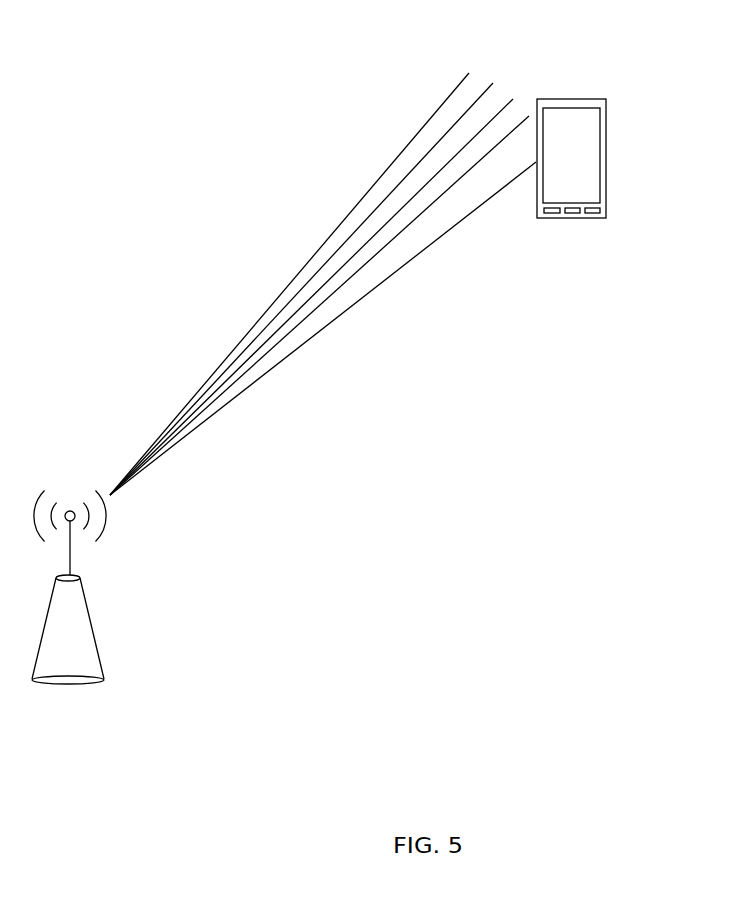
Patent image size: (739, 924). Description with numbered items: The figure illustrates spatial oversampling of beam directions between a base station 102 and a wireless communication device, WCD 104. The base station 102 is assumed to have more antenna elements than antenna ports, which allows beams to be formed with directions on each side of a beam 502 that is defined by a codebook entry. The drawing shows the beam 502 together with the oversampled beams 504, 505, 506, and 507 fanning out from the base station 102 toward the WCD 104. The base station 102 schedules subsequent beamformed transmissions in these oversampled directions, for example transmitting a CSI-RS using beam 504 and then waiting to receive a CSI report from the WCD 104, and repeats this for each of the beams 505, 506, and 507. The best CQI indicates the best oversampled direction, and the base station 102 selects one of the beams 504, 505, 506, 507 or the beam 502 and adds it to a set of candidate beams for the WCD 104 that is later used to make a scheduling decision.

The base station 102 is at (94, 658).
The WCD 104 is at (606, 160).
The beam 502 is at (512, 98).
The beam 504 is at (460, 82).
The beam 505 is at (398, 182).
The beam 506 is at (365, 267).
The beam 507 is at (490, 195).